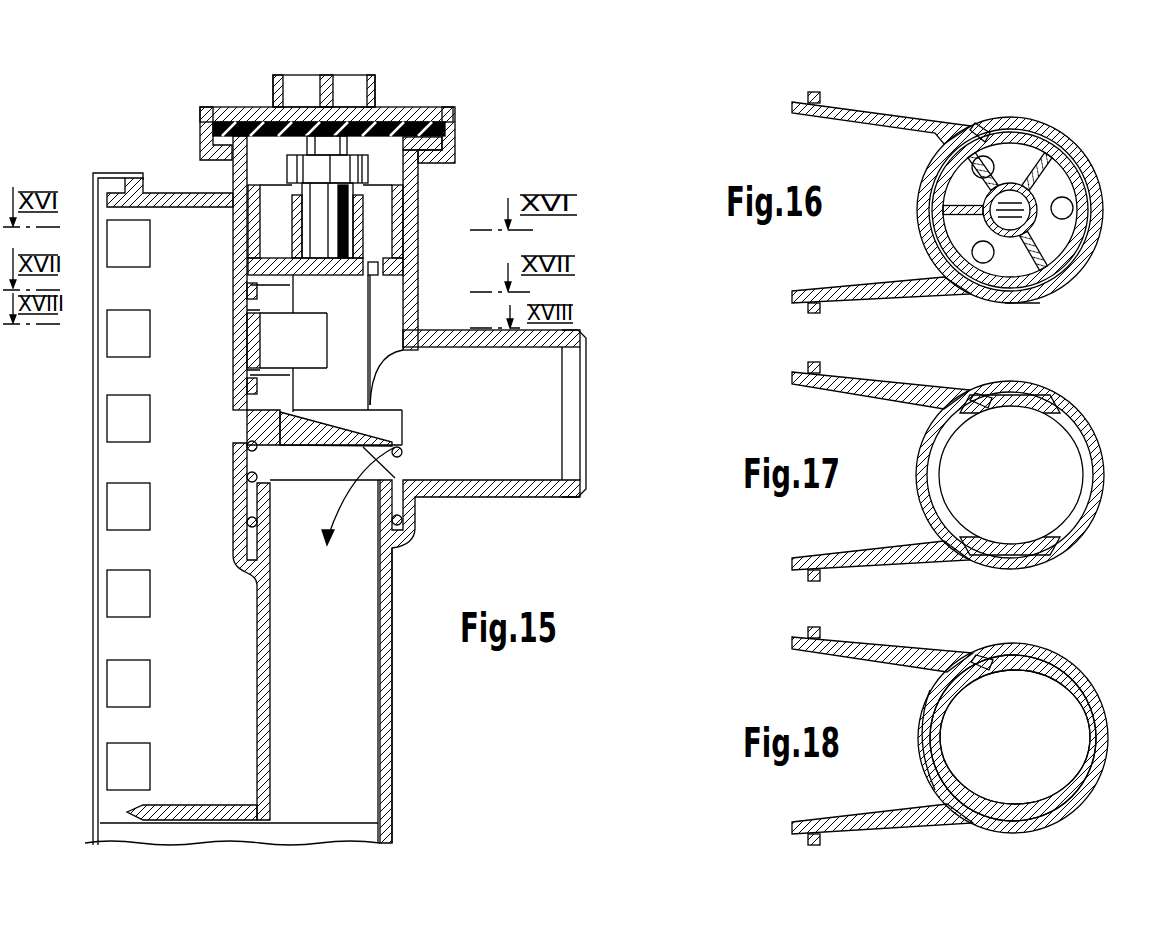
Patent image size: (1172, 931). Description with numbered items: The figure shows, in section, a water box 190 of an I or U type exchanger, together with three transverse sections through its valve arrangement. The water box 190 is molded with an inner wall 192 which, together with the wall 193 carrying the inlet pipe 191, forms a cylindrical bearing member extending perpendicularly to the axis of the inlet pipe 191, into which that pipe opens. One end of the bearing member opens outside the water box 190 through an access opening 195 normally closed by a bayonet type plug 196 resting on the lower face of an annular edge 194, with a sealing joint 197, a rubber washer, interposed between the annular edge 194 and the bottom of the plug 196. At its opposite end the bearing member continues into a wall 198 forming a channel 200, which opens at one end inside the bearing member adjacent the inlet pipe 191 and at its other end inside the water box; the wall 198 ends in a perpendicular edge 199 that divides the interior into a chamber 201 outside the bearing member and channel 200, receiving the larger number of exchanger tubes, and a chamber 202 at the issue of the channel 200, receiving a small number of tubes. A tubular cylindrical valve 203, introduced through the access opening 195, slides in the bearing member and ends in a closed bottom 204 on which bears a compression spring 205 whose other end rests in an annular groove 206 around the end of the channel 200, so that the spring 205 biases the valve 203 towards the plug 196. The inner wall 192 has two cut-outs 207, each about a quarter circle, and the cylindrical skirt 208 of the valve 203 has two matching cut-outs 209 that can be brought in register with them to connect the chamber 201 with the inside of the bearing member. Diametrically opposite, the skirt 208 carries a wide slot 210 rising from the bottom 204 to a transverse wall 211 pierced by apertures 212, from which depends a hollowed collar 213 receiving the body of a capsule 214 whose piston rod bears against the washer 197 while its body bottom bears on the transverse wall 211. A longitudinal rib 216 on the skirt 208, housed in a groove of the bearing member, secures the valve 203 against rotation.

In FIG. 15, the water box 190 is at (412, 803).
In FIG. 16, the water box 190 is at (962, 112).
In FIG. 15, the inlet pipe 191 is at (525, 495).
In FIG. 15, the inner wall 192 is at (241, 257).
In FIG. 16, the inner wall 192 is at (918, 201).
In FIG. 17, the inner wall 192 is at (918, 448).
In FIG. 18, the inner wall 192 is at (918, 716).
In FIG. 15, the wall 193 is at (416, 258).
In FIG. 16, the wall 193 is at (1102, 196).
In FIG. 17, the wall 193 is at (1105, 447).
In FIG. 18, the wall 193 is at (1105, 727).
In FIG. 15, the annular edge 194 is at (445, 150).
In FIG. 15, the access opening 195 is at (266, 157).
In FIG. 15, the plug 196 is at (437, 107).
In FIG. 15, the sealing joint 197 is at (200, 121).
In FIG. 15, the wall 198 is at (262, 630).
In FIG. 15, the perpendicular edge 199 is at (237, 773).
In FIG. 15, the channel 200 is at (365, 738).
In FIG. 15, the chamber 201 is at (160, 540).
In FIG. 15, the chamber 202 is at (160, 830).
In FIG. 15, the tubular cylindrical valve 203 is at (272, 346).
In FIG. 17, the tubular cylindrical valve 203 is at (1067, 515).
In FIG. 18, the tubular cylindrical valve 203 is at (1048, 688).
In FIG. 15, the closed bottom 204 is at (323, 428).
In FIG. 15, the compression spring 205 is at (398, 447).
In FIG. 15, the annular groove 206 is at (255, 500).
In FIG. 15, the cut-outs 207 is at (246, 315).
In FIG. 18, the cut-outs 207 is at (927, 780).
In FIG. 15, the cylindrical skirt 208 is at (248, 341).
In FIG. 18, the cylindrical skirt 208 is at (943, 763).
In FIG. 15, the cut-outs 209 is at (258, 291).
In FIG. 17, the cut-outs 209 is at (945, 490).
In FIG. 15, the wide slot 210 is at (372, 323).
In FIG. 17, the wide slot 210 is at (1058, 410).
In FIG. 15, the transverse wall 211 is at (280, 257).
In FIG. 16, the transverse wall 211 is at (1075, 240).
In FIG. 15, the apertures 212 is at (377, 272).
In FIG. 16, the apertures 212 is at (1065, 200).
In FIG. 15, the hollowed collar 213 is at (293, 212).
In FIG. 16, the hollowed collar 213 is at (1040, 300).
In FIG. 15, the capsule 214 is at (348, 222).
In FIG. 16, the longitudinal rib 216 is at (985, 122).
In FIG. 17, the longitudinal rib 216 is at (985, 395).
In FIG. 18, the longitudinal rib 216 is at (975, 655).